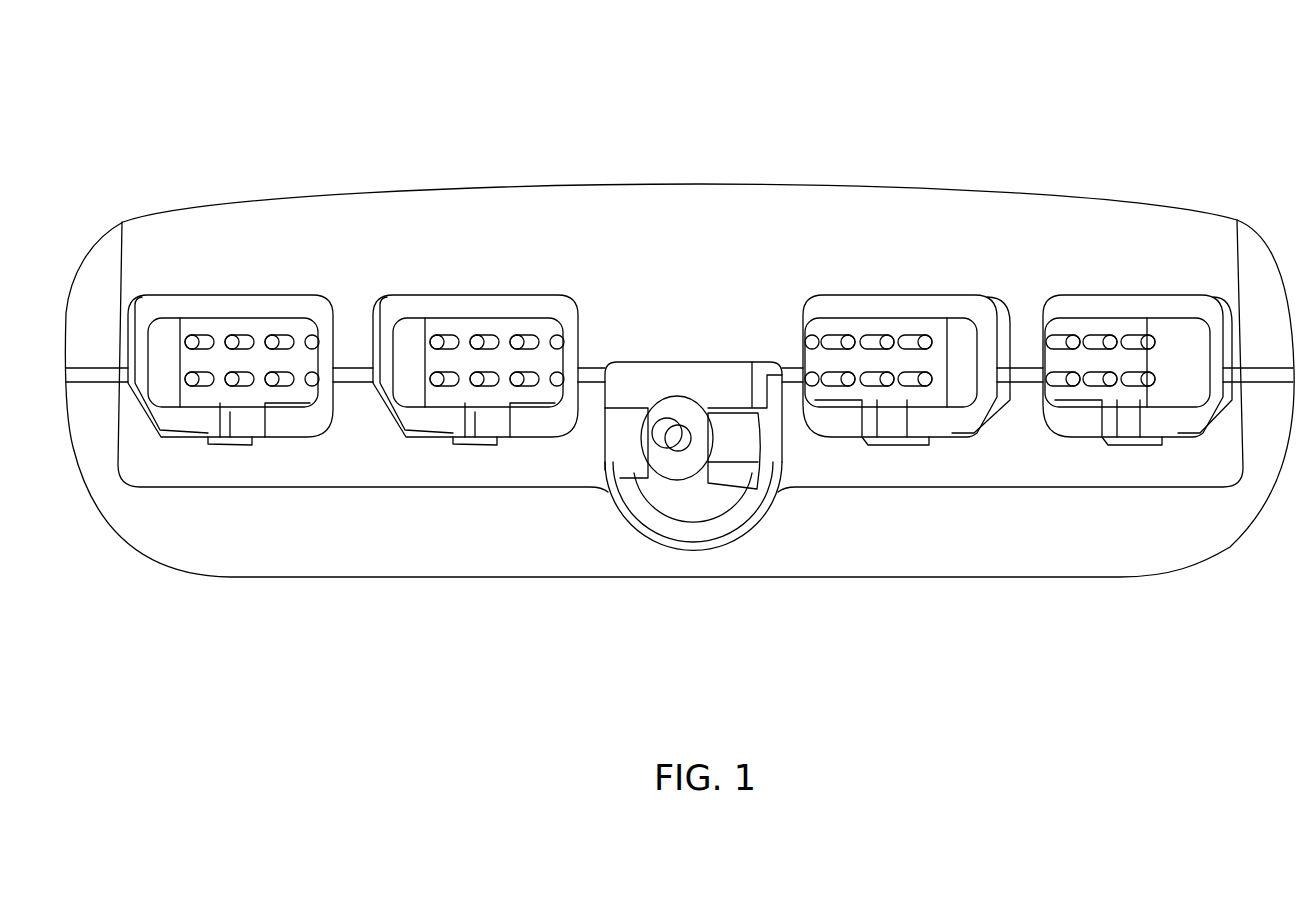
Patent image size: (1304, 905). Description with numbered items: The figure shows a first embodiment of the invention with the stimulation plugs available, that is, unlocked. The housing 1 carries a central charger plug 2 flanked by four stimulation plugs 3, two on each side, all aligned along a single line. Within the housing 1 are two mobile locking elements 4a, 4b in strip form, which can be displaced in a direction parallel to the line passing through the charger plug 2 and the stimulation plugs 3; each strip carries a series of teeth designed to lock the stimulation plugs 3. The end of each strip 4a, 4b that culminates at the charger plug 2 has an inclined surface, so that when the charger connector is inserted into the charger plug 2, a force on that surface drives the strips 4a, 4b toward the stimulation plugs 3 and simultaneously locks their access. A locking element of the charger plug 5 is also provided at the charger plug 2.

The housing 1 is at (873, 175).
The charger plug 2 is at (663, 470).
The stimulation plug 3 is at (203, 297).
The mobile locking element 4a is at (632, 415).
The mobile locking element 4b is at (725, 413).
The locking element of the charger plug 5 is at (620, 478).